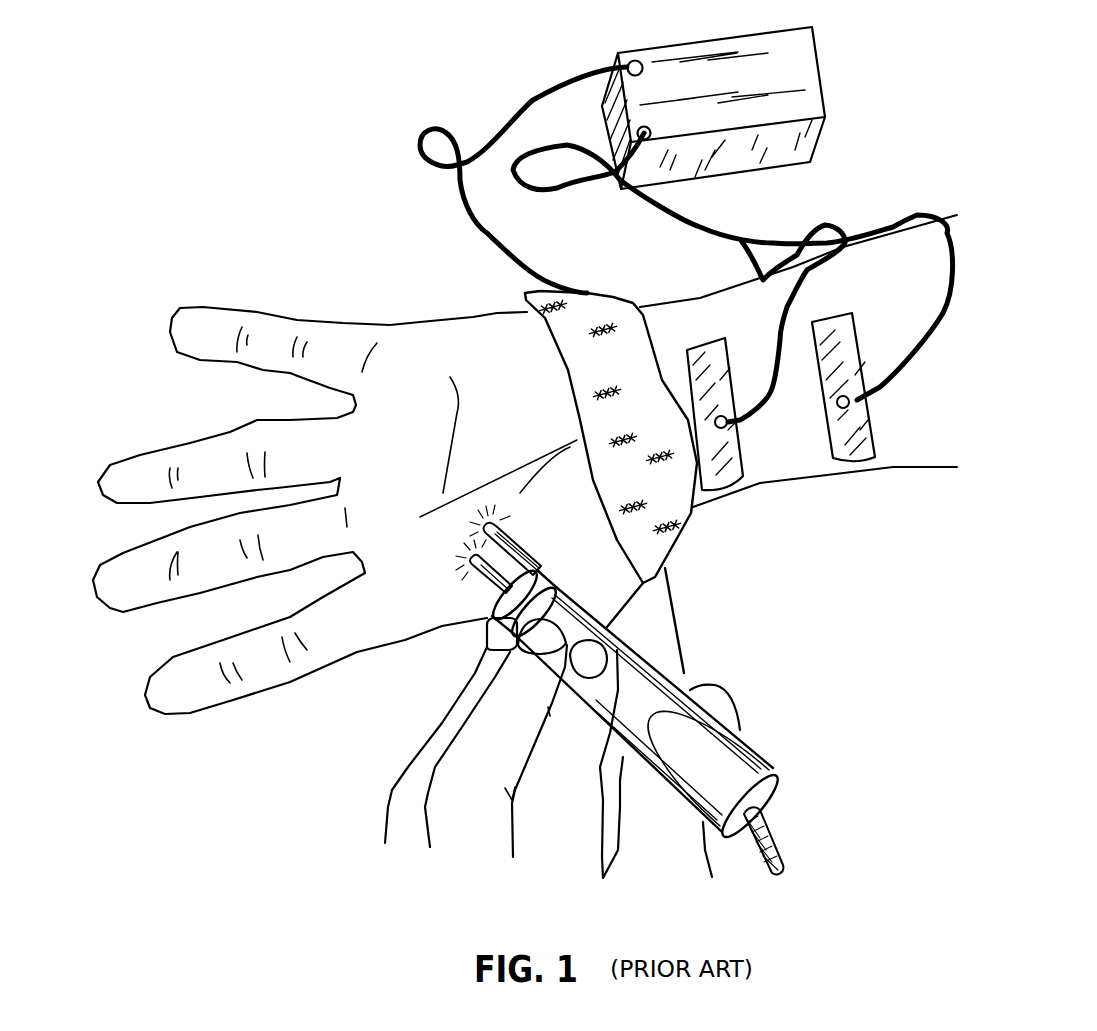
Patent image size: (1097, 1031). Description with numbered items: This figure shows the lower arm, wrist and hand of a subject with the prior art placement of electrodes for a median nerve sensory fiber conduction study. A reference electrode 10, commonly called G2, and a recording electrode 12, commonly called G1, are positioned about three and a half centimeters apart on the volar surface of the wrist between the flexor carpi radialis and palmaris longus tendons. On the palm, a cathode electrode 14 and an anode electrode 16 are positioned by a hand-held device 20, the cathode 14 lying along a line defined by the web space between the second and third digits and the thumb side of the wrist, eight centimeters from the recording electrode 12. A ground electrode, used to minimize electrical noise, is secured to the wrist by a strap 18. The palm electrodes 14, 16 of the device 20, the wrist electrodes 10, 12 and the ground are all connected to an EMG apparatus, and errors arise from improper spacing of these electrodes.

The reference electrode 10 is at (848, 392).
The recording electrode 12 is at (722, 417).
The palm electrode (cathode) 14 is at (493, 513).
The anode electrode 16 is at (473, 550).
The strap 18 is at (612, 297).
The hand-held device 20 is at (667, 713).